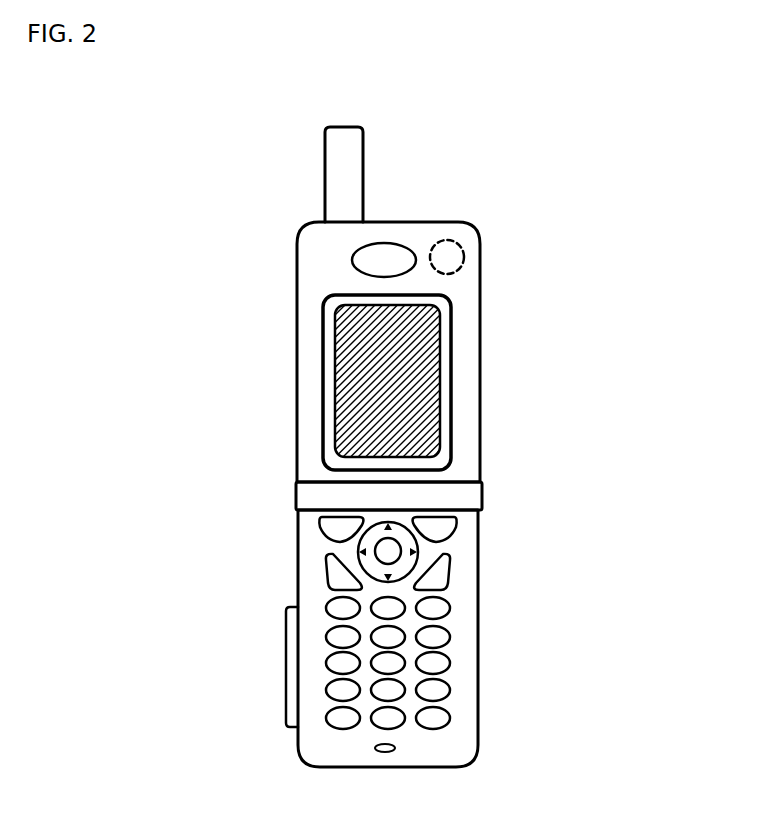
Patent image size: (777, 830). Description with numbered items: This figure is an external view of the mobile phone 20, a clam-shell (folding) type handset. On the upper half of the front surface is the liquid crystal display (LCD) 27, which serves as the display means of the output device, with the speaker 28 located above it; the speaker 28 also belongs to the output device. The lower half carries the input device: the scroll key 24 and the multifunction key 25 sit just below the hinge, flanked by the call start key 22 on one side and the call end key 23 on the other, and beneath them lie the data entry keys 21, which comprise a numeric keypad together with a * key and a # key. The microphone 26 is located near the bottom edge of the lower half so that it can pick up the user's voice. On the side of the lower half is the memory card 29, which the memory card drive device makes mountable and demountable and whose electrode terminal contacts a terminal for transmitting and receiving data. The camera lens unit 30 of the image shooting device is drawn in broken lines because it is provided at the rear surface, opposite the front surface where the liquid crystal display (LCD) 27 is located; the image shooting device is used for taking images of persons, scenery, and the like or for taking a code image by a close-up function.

The mobile phone 20 is at (491, 325).
The data entry keys 21 is at (458, 621).
The call start key 22 is at (328, 572).
The call end key 23 is at (450, 572).
The scroll key 24 is at (340, 542).
The multifunction key 25 is at (389, 553).
The microphone 26 is at (395, 748).
The liquid crystal display (LCD) 27 is at (451, 390).
The speaker 28 is at (352, 259).
The memory card 29 is at (286, 660).
The camera lens unit 30 is at (464, 253).